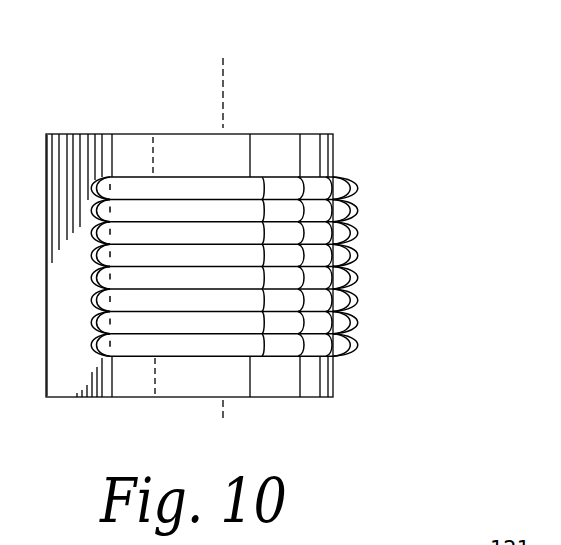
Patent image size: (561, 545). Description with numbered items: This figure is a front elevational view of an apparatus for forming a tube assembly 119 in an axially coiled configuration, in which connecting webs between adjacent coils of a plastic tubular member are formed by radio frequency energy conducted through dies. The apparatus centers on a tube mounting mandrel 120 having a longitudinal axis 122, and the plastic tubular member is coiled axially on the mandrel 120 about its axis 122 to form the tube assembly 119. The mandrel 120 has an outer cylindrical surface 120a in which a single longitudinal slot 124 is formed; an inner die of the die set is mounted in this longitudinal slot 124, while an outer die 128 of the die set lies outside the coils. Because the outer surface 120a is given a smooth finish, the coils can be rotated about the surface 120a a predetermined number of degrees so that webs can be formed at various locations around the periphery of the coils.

The tube mounting mandrel 120 is at (82, 131).
The outer cylindrical surface 120a is at (170, 373).
The outer die 128 is at (62, 379).
The longitudinal slot 124 is at (147, 134).
The longitudinal axis 122 is at (223, 100).
The tube assembly 119 is at (367, 257).